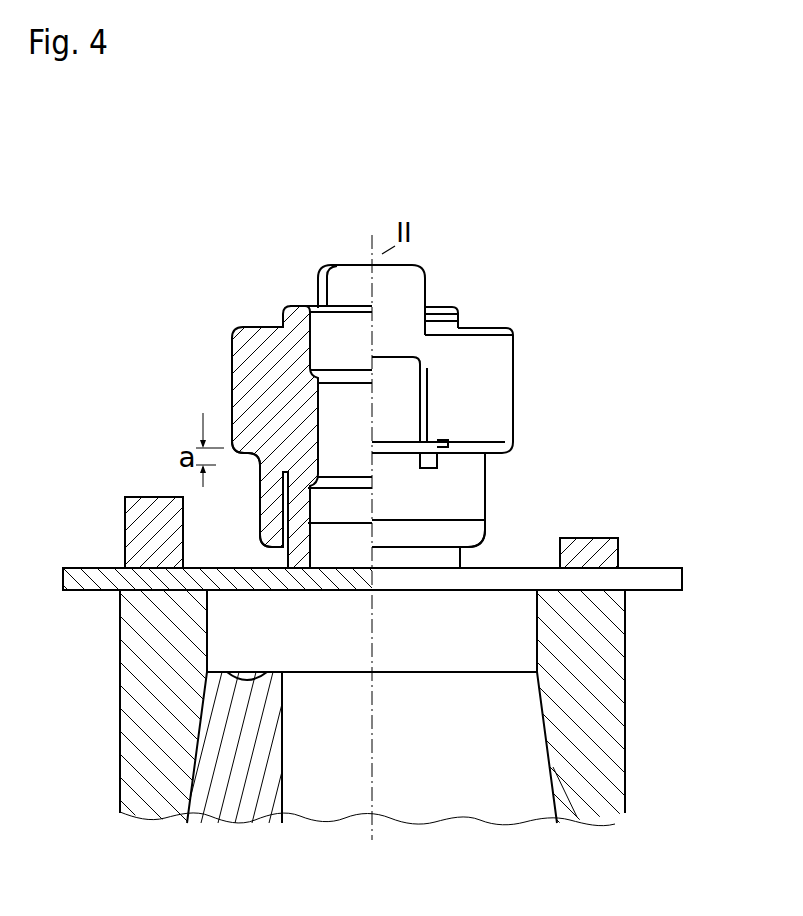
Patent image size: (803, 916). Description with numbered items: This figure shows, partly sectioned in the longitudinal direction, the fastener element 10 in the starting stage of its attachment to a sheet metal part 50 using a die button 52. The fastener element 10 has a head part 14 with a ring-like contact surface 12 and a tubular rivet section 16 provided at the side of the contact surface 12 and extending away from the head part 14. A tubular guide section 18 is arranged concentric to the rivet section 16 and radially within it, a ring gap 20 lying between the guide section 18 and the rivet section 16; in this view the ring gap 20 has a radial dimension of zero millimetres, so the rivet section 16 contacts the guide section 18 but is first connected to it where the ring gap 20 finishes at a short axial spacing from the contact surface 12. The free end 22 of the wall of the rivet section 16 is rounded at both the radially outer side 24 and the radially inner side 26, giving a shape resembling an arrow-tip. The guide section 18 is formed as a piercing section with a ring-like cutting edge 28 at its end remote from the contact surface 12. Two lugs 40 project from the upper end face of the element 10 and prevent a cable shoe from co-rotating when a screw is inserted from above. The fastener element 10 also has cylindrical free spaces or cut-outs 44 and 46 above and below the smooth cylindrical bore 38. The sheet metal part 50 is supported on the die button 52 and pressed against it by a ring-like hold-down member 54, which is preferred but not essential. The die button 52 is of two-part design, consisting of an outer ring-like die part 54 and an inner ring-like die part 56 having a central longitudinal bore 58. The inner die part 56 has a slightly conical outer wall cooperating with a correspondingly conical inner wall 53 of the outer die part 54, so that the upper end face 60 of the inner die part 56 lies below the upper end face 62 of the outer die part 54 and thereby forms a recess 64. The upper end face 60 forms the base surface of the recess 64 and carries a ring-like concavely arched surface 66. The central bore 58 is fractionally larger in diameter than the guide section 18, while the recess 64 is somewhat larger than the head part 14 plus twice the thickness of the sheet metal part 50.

The fastener element 10 is at (530, 372).
The ring-like contact surface 12 is at (237, 467).
The head part 14 is at (232, 400).
The tubular rivet section 16 is at (486, 492).
The tubular guide section 18 is at (462, 560).
The ring gap 20 is at (283, 514).
The free end 22 is at (488, 542).
The radially outer side 24 is at (261, 538).
The radially inner side 26 is at (272, 550).
The ring-like cutting edge 28 is at (298, 566).
The smooth cylindrical bore 38 is at (319, 430).
The lugs 40 is at (427, 287).
The cylindrical free space 44 is at (312, 351).
The cylindrical free space 46 is at (310, 516).
The sheet metal part 50 is at (653, 590).
The die button 52 is at (640, 736).
The conically extending inner wall 53 is at (568, 800).
The hold-down member 54 is at (125, 542).
The inner die part 56 is at (284, 788).
The central longitudinal bore 58 is at (284, 712).
The upper end face 60 is at (277, 672).
The upper end face 62 is at (626, 614).
The recess 64 is at (460, 651).
The ring-like concavely arched surface 66 is at (243, 678).